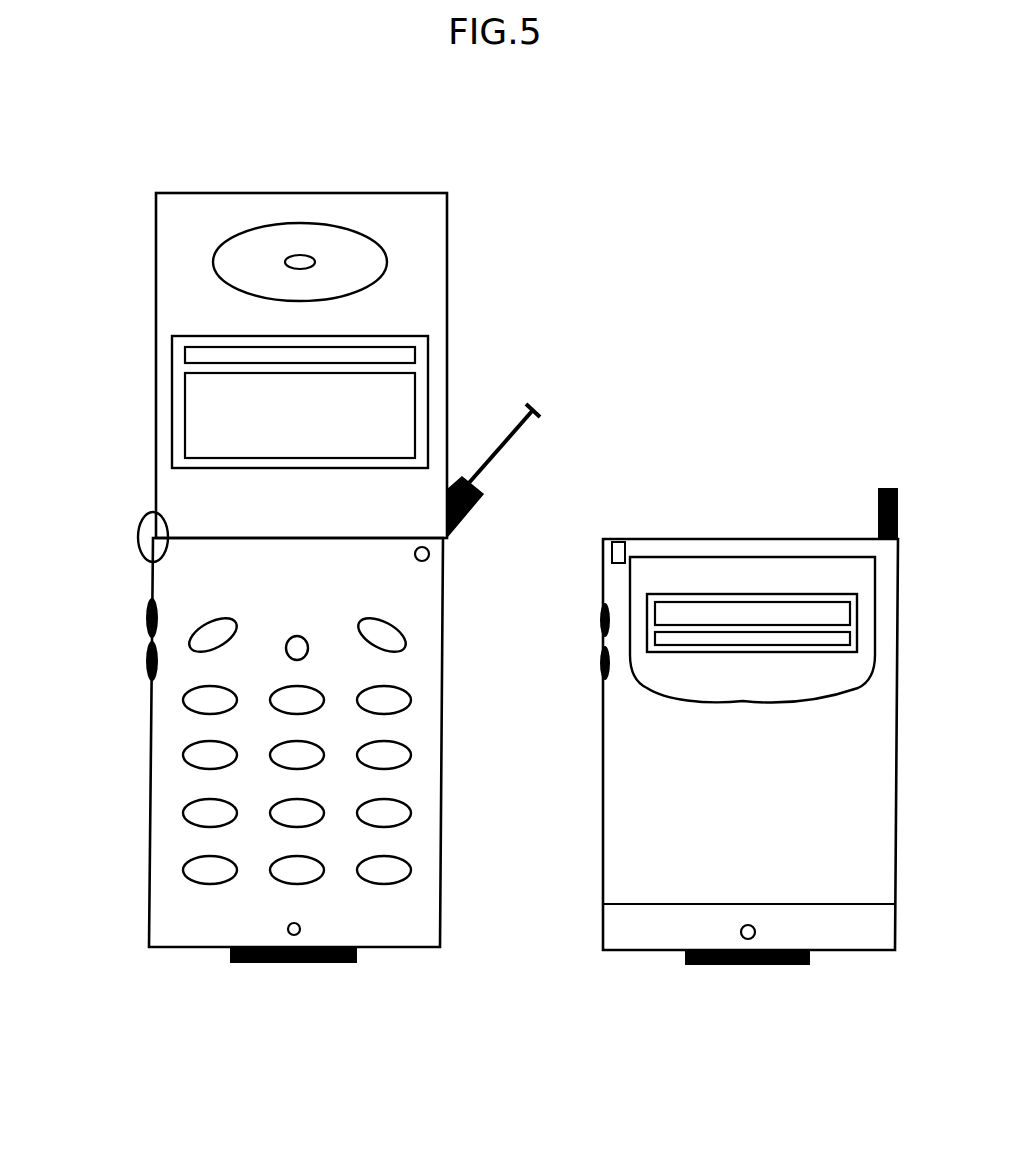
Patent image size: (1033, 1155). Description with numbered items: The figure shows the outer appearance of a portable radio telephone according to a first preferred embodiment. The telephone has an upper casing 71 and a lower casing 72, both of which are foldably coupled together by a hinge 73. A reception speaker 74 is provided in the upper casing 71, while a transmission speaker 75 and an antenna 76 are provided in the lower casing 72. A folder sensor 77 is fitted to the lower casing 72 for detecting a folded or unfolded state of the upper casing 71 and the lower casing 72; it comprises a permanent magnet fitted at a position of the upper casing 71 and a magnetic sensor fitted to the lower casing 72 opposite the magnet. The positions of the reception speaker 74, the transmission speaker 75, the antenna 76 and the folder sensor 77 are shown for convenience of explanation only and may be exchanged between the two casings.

The upper casing 71 is at (155, 266).
The lower casing 72 is at (442, 840).
The hinge 73 is at (138, 537).
The reception speaker 74 is at (368, 260).
The transmission speaker 75 is at (288, 928).
The antenna 76 is at (540, 405).
The folder sensor 77 is at (430, 554).